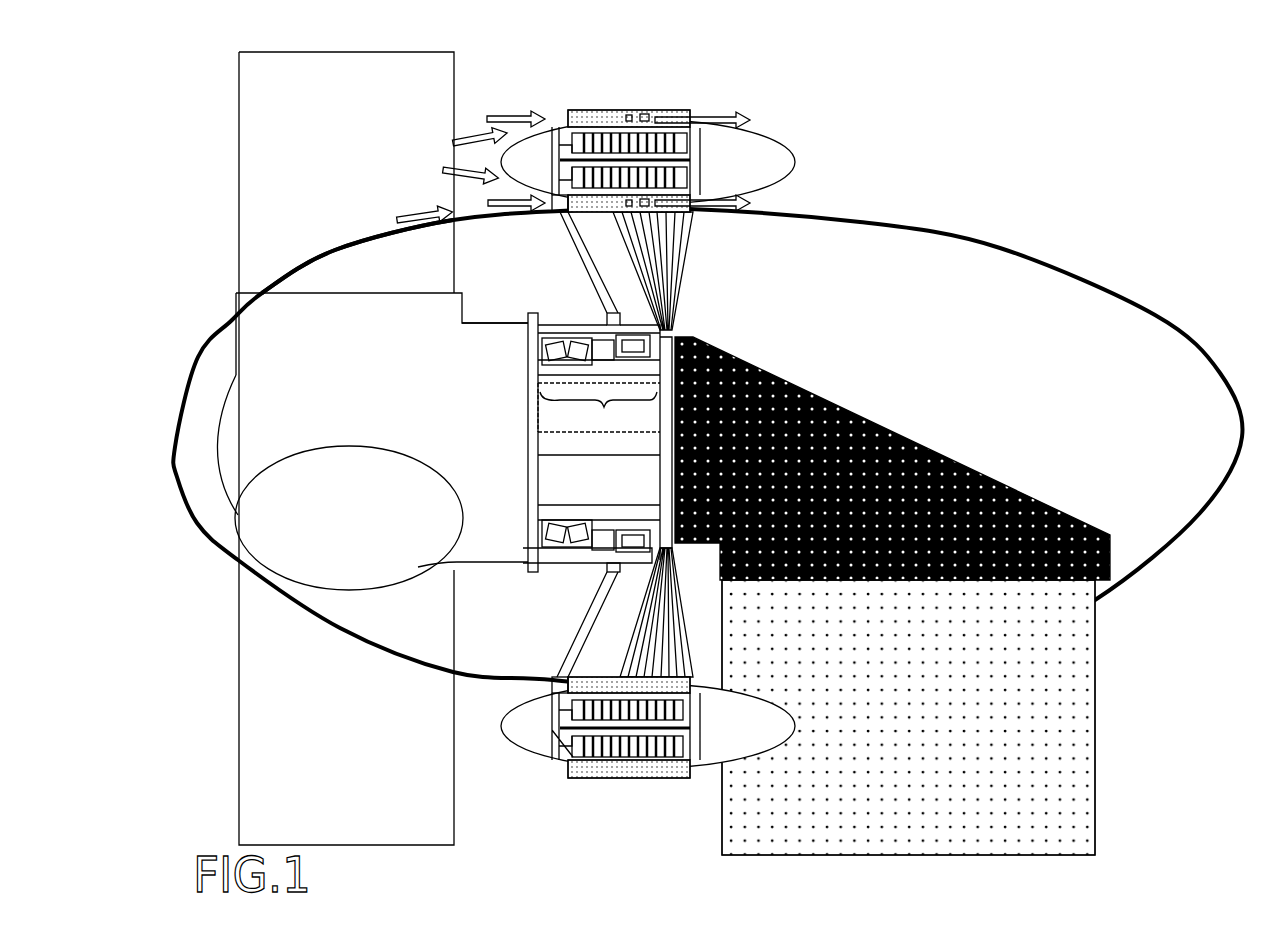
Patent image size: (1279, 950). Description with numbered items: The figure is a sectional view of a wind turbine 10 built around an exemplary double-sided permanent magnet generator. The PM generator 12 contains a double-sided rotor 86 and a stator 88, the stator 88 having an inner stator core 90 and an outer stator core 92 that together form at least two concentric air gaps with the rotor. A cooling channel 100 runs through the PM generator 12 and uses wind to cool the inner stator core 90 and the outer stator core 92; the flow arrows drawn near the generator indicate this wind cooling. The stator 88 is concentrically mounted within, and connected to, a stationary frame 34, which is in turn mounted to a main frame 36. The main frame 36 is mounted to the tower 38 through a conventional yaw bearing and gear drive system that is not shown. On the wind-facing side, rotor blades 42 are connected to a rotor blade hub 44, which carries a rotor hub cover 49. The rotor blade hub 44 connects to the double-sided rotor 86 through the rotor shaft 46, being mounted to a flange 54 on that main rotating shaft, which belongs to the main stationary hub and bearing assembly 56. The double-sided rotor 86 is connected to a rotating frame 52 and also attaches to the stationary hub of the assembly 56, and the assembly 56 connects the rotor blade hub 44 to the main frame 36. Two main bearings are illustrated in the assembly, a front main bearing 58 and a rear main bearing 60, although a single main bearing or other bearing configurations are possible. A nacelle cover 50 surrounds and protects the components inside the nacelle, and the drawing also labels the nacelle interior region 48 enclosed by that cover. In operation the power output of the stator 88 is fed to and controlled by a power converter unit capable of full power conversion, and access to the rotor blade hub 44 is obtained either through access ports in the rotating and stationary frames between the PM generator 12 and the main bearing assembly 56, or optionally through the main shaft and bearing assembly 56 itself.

The wind turbine 10 is at (1278, 133).
The PM generator 12 is at (673, 411).
The stationary frame 34 is at (700, 265).
The main frame 36 is at (927, 452).
The tower 38 is at (1083, 742).
The rotor blades 42 is at (248, 183).
The rotor blade hub 44 is at (260, 345).
The rotor shaft 46 is at (592, 337).
The nacelle interior 48 is at (1128, 345).
The rotor hub cover 49 is at (340, 253).
The nacelle cover 50 is at (964, 228).
The rotating frame 52 is at (590, 270).
The flange 54 is at (503, 337).
The main stationary hub and bearing assembly 56 is at (599, 407).
The front main bearing 58 is at (565, 350).
The rear main bearing 60 is at (668, 337).
The double-sided rotor 86 is at (557, 148).
The stator 88 is at (503, 190).
The inner stator core 90 is at (733, 206).
The outer stator core 92 is at (640, 110).
The cooling channel 100 is at (608, 122).